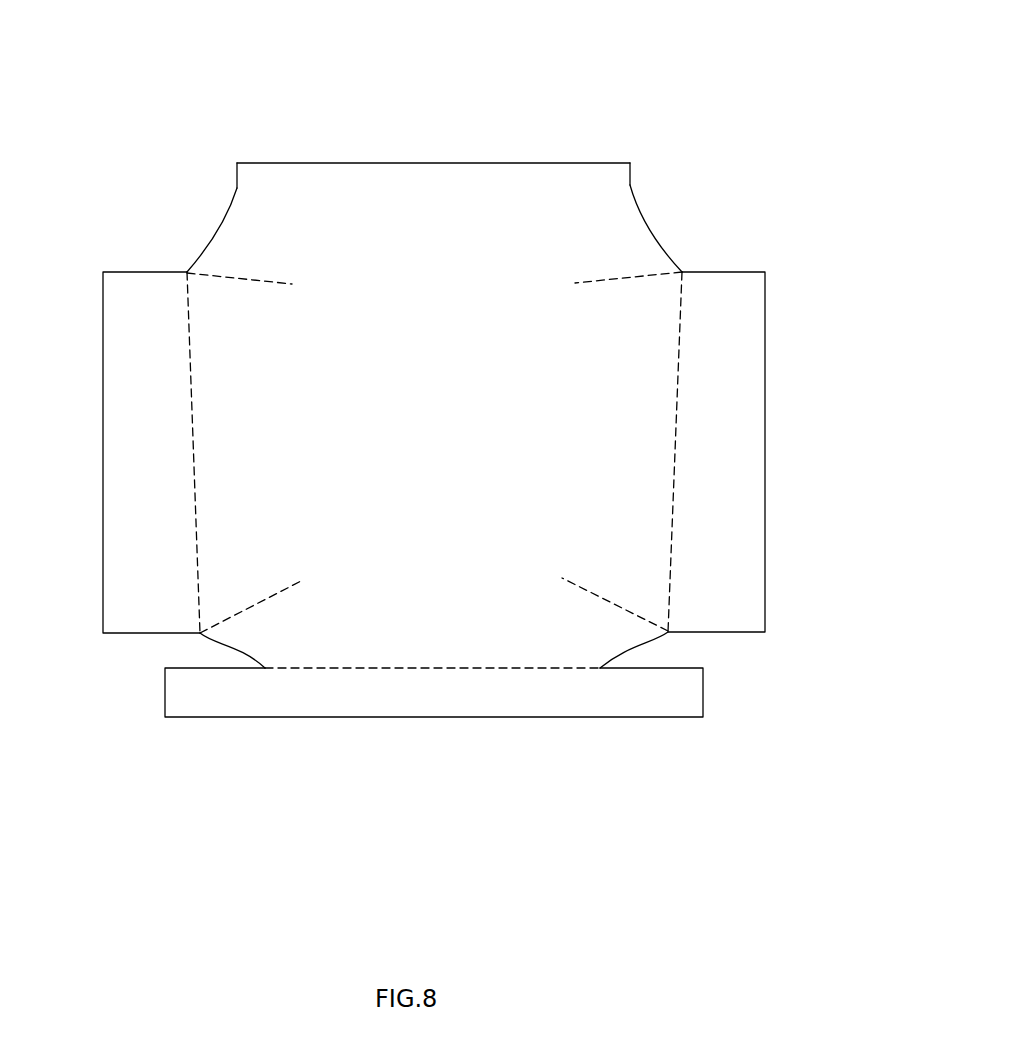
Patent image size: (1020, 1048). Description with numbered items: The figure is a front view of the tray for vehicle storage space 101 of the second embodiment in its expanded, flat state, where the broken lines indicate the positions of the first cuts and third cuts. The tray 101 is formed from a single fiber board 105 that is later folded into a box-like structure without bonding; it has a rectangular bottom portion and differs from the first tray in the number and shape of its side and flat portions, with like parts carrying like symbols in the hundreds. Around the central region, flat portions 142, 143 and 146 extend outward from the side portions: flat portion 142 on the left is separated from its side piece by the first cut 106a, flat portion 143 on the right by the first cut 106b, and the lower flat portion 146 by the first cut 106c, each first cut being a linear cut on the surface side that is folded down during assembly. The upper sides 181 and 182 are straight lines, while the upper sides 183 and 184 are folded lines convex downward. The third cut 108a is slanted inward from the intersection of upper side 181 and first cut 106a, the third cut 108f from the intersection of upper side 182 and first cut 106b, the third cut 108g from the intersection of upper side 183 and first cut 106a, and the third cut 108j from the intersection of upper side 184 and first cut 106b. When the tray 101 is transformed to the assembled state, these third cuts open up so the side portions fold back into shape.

The tray for vehicle storage space 101 is at (673, 43).
The fiber board 105 is at (300, 160).
The upper side 181 is at (224, 207).
The upper side 182 is at (646, 214).
The flat portion 142 is at (115, 430).
The flat portion 143 is at (740, 397).
The first cut 106a is at (191, 397).
The first cut 106b is at (675, 425).
The first cut 106c is at (400, 667).
The third cut 108a is at (246, 277).
The third cut 108f is at (622, 276).
The third cut 108g is at (258, 600).
The third cut 108j is at (600, 598).
The upper side 183 is at (218, 640).
The upper side 184 is at (652, 637).
The flat portion 146 is at (438, 712).